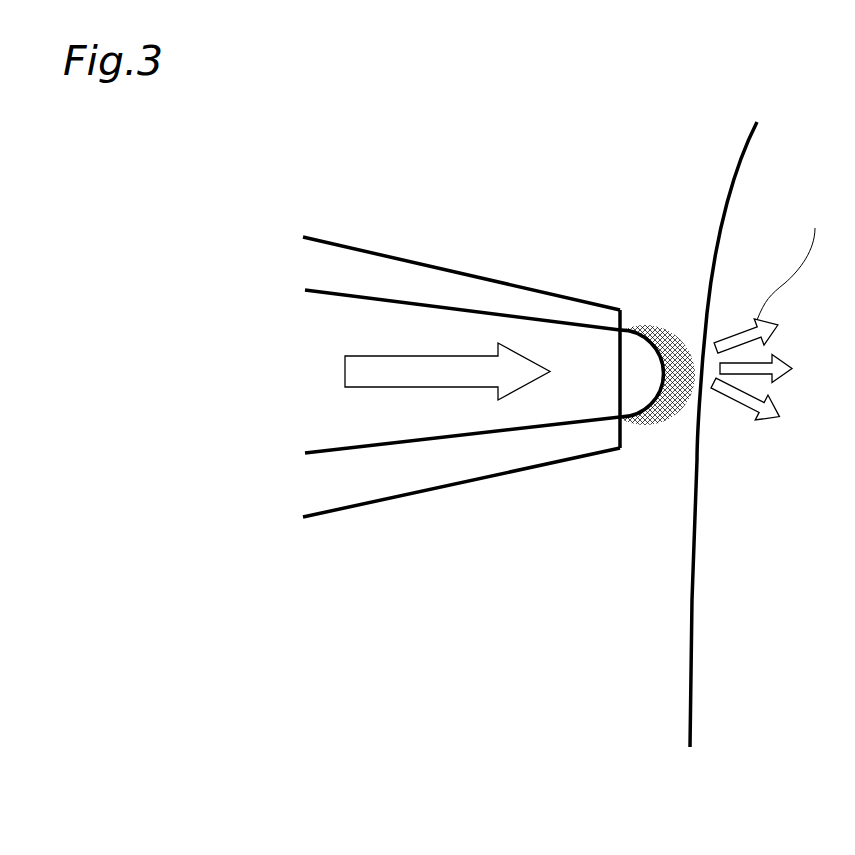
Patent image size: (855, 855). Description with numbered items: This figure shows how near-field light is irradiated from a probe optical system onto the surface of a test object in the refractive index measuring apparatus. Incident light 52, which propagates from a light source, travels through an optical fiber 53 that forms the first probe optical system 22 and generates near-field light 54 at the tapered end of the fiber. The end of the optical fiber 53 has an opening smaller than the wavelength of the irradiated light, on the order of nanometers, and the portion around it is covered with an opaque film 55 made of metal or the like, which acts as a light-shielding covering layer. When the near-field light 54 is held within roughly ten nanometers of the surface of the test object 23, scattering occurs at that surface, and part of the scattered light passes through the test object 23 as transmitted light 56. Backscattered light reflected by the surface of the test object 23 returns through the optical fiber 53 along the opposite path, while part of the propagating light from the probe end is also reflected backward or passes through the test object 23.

The first probe optical system 22 is at (460, 330).
The test object 23 is at (722, 210).
The incident light 52 is at (356, 368).
The optical fiber 53 is at (467, 328).
The near-field light 54 is at (649, 322).
The opaque film 55 is at (478, 462).
The transmitted light 56 is at (645, 307).